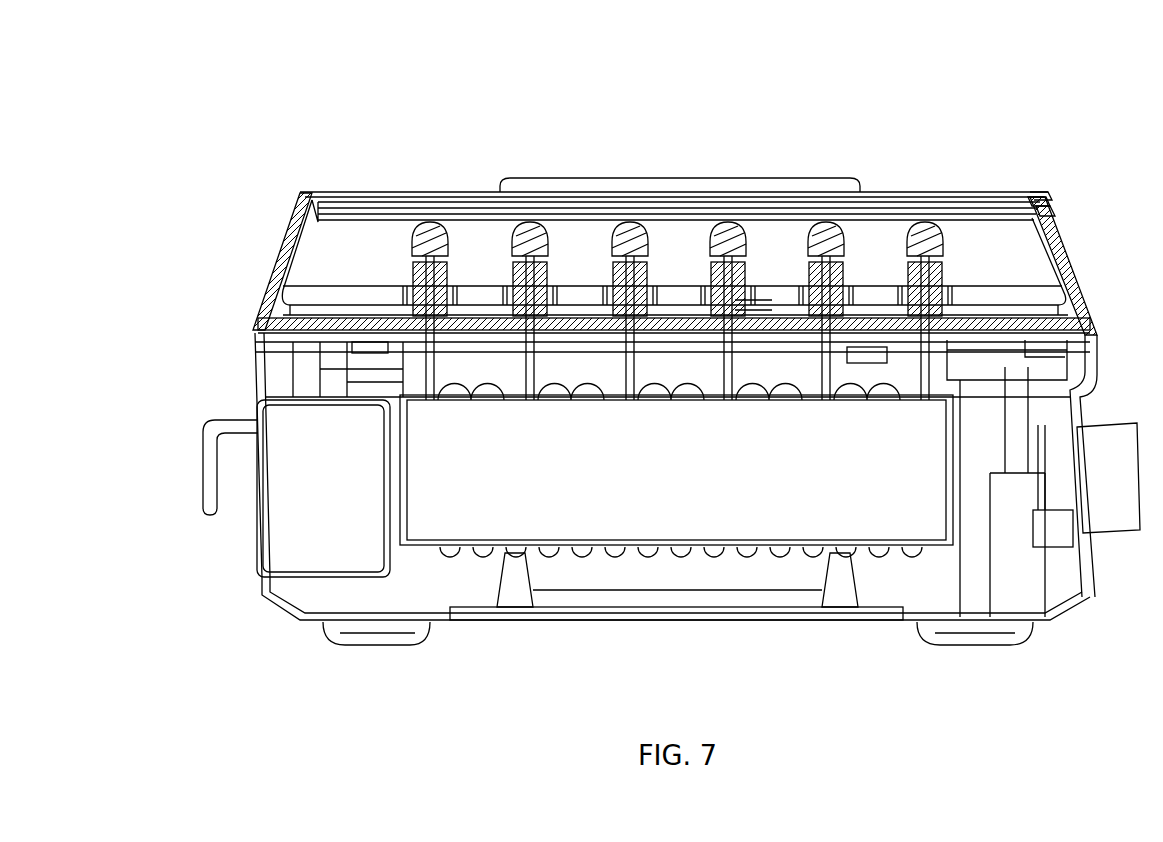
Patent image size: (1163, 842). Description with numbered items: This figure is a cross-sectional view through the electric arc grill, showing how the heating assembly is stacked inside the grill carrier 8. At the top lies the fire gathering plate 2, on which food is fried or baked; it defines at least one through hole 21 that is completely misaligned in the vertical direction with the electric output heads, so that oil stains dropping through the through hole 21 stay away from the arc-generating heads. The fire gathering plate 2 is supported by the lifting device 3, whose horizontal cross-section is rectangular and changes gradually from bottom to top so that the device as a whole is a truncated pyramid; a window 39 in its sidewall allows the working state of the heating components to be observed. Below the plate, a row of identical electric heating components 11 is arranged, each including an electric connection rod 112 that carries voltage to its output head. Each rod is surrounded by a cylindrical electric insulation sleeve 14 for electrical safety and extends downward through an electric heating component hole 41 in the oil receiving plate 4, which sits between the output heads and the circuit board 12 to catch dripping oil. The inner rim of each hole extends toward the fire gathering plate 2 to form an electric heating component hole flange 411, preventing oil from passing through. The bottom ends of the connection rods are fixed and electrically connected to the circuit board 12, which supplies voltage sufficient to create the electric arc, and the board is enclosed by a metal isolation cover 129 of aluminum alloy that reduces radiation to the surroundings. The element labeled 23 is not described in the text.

The fire gathering plate 2 is at (920, 217).
The through hole 21 is at (1033, 205).
The lid edge 23 is at (1041, 205).
The lifting device 3 is at (1047, 202).
The window 39 is at (1083, 272).
The oil receiving plate 4 is at (765, 300).
The electric heating component hole flange 411 is at (775, 290).
The electric insulation sleeve 14 is at (812, 255).
The electric heating component hole 41 is at (798, 268).
The electric heating component 11 is at (828, 250).
The electric connection rod 112 is at (848, 215).
The circuit board 12 is at (410, 397).
The grill carrier 8 is at (487, 612).
The metal isolation cover 129 is at (640, 607).